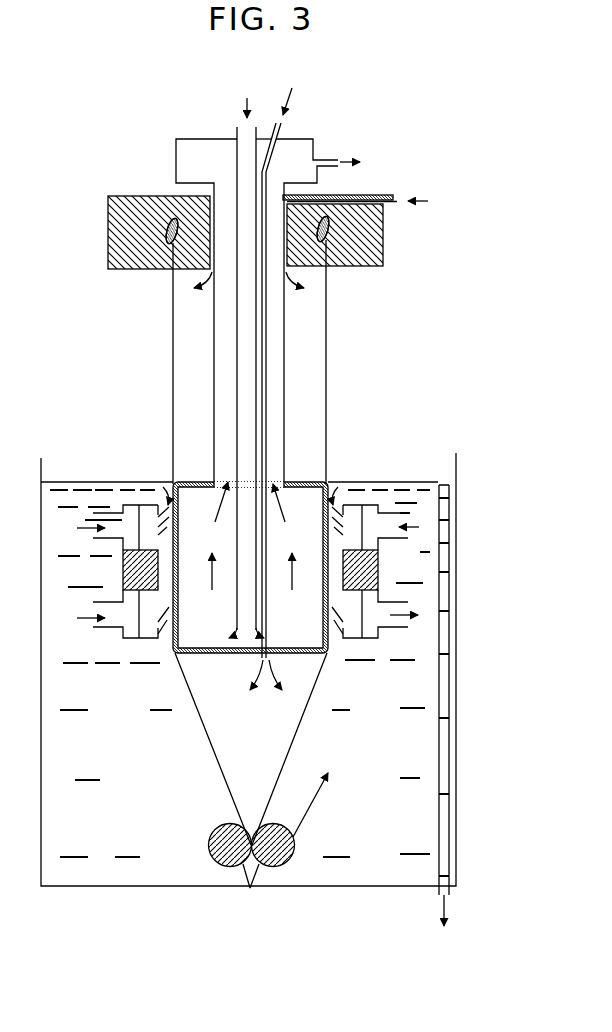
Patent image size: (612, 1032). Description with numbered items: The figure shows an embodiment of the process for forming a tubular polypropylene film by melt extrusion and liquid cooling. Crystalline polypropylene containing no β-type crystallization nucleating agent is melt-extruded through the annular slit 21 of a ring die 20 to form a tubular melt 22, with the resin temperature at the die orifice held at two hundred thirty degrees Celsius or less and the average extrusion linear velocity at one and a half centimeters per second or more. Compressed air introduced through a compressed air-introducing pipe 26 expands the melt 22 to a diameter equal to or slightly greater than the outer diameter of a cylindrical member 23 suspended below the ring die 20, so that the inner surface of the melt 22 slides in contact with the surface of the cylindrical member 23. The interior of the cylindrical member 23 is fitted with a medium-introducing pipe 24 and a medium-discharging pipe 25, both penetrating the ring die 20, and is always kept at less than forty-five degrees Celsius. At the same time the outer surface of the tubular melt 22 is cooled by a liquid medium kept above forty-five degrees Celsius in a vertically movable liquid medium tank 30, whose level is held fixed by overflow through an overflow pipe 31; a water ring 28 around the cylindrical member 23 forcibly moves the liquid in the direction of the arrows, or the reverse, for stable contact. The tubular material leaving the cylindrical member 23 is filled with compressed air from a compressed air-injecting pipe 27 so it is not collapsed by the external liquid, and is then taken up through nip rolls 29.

The ring die 20 is at (376, 241).
The annular slit 21 is at (336, 268).
The tubular melt 22 is at (326, 368).
The cylindrical member 23 is at (300, 483).
The medium-introducing pipe 24 is at (236, 137).
The medium-discharging pipe 25 is at (275, 363).
The compressed air-introducing pipe 26 is at (392, 195).
The compressed air-injecting pipe 27 is at (269, 656).
The water ring 28 is at (380, 582).
The nip rolls 29 is at (250, 888).
The liquid medium tank 30 is at (460, 757).
The overflow pipe 31 is at (450, 687).